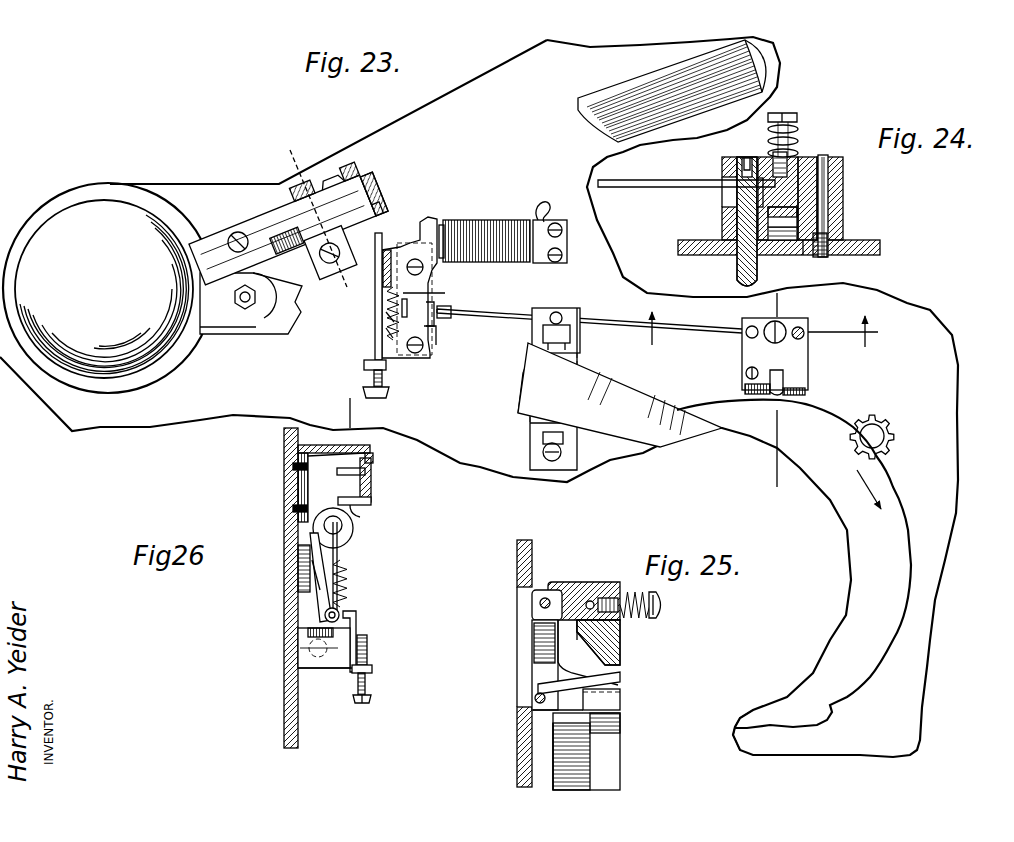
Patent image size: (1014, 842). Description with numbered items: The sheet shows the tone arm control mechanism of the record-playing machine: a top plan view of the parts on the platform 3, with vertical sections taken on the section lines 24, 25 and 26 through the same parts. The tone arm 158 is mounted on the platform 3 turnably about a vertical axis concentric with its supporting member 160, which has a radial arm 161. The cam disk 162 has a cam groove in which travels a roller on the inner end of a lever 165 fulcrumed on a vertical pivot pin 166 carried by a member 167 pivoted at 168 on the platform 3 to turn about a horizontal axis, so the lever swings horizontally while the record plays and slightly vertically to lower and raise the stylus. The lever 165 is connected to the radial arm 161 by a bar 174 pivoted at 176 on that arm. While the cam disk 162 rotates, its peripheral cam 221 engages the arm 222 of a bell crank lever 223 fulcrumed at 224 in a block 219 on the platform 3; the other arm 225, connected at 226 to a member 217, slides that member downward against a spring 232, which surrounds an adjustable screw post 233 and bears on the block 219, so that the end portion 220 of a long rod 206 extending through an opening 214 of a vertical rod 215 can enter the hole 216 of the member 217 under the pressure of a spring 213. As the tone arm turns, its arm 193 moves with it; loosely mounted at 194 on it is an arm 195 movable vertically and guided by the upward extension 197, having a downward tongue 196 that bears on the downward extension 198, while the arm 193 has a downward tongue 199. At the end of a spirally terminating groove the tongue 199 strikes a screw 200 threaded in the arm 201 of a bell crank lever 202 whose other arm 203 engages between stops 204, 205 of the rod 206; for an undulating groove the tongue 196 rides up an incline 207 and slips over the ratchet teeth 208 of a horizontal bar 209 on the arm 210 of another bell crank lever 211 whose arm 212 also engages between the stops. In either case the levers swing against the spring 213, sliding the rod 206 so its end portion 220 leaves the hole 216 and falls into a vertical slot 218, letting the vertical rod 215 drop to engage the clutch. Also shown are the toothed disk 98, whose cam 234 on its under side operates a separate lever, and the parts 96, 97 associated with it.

In FIG. 23, the platform 3 is at (479, 397).
In FIG. 24, the platform 3 is at (868, 244).
In FIG. 25, the platform 3 is at (518, 565).
In FIG. 26, the platform 3 is at (284, 460).
In FIG. 23, the section line 24- 24 is at (759, 339).
In FIG. 23, the section line 25- 25 is at (789, 305).
In FIG. 23, the section line 26- 26 is at (306, 152).
In FIG. 23, the ratchet wheel 96 is at (886, 437).
In FIG. 23, the ratchet teeth 97 is at (878, 418).
In FIG. 25, the toothed disk 98 is at (560, 778).
In FIG. 23, the tone arm 158 is at (672, 91).
In FIG. 23, the supporting member 160 is at (108, 288).
In FIG. 23, the radial arm 161 is at (220, 328).
In FIG. 23, the cam disk 162 is at (794, 564).
In FIG. 25, the cam disk 162 is at (608, 748).
In FIG. 23, the lever 165 is at (608, 395).
In FIG. 23, the vertical pivot pin 166 is at (533, 395).
In FIG. 23, the member 167 is at (580, 350).
In FIG. 23, the pivot 168 is at (537, 342).
In FIG. 23, the bar 174 is at (287, 305).
In FIG. 23, the pivot 176 is at (254, 323).
In FIG. 23, the arm 193 is at (232, 228).
In FIG. 26, the arm 193 is at (372, 501).
In FIG. 23, the mounting 194 is at (250, 252).
In FIG. 23, the arm 195 is at (381, 197).
In FIG. 26, the arm 195 is at (372, 475).
In FIG. 23, the downward tongue 196 is at (364, 174).
In FIG. 26, the downward tongue 196 is at (331, 487).
In FIG. 23, the upward extension 197 is at (352, 182).
In FIG. 26, the downward extension 198 is at (368, 458).
In FIG. 23, the downward tongue 199 is at (374, 212).
In FIG. 26, the downward tongue 199 is at (368, 513).
In FIG. 23, the screw 200 is at (381, 391).
In FIG. 26, the screw 200 is at (357, 697).
In FIG. 23, the arm 201 is at (414, 364).
In FIG. 26, the arm 201 is at (348, 670).
In FIG. 23, the bell crank lever 202 is at (438, 343).
In FIG. 26, the bell crank lever 202 is at (358, 638).
In FIG. 23, the arm 203 is at (436, 325).
In FIG. 26, the arm 203 is at (358, 620).
In FIG. 23, the stop 204 is at (413, 303).
In FIG. 26, the stop 204 is at (342, 612).
In FIG. 23, the stop 205 is at (452, 311).
In FIG. 23, the long rod 206 is at (593, 320).
In FIG. 24, the long rod 206 is at (655, 181).
In FIG. 23, the incline 207 is at (384, 263).
In FIG. 26, the incline 207 is at (300, 568).
In FIG. 23, the ratchet teeth 208 is at (387, 317).
In FIG. 23, the horizontal bar 209 is at (387, 305).
In FIG. 26, the horizontal bar 209 is at (310, 585).
In FIG. 23, the arm 210 is at (383, 241).
In FIG. 26, the arm 210 is at (312, 552).
In FIG. 23, the bell crank lever 211 is at (428, 272).
In FIG. 26, the bell crank lever 211 is at (340, 556).
In FIG. 23, the arm 212 is at (446, 293).
In FIG. 23, the spring 213 is at (387, 333).
In FIG. 26, the spring 213 is at (347, 590).
In FIG. 24, the opening 214 is at (748, 158).
In FIG. 23, the vertical rod 215 is at (744, 327).
In FIG. 24, the hole 216 is at (773, 182).
In FIG. 25, the hole 216 is at (582, 628).
In FIG. 23, the member 217 is at (764, 338).
In FIG. 24, the member 217 is at (798, 178).
In FIG. 25, the member 217 is at (578, 592).
In FIG. 24, the vertical slot 218 is at (722, 200).
In FIG. 23, the block 219 is at (775, 356).
In FIG. 24, the block 219 is at (723, 159).
In FIG. 25, the block 219 is at (621, 660).
In FIG. 24, the end portion 220 is at (804, 157).
In FIG. 23, the peripheral cam 221 is at (822, 723).
In FIG. 23, the arm 222 is at (806, 392).
In FIG. 25, the arm 222 is at (612, 700).
In FIG. 25, the bell crank lever 223 is at (579, 683).
In FIG. 25, the fulcrum 224 is at (534, 698).
In FIG. 24, the arm 225 is at (778, 241).
In FIG. 25, the arm 225 is at (540, 645).
In FIG. 24, the connection 226 is at (803, 241).
In FIG. 25, the connection 226 is at (540, 603).
In FIG. 25, the spring 232 is at (640, 618).
In FIG. 24, the adjustable screw post 233 is at (796, 115).
In FIG. 25, the adjustable screw post 233 is at (663, 605).
In FIG. 24, the cam 234 is at (770, 133).